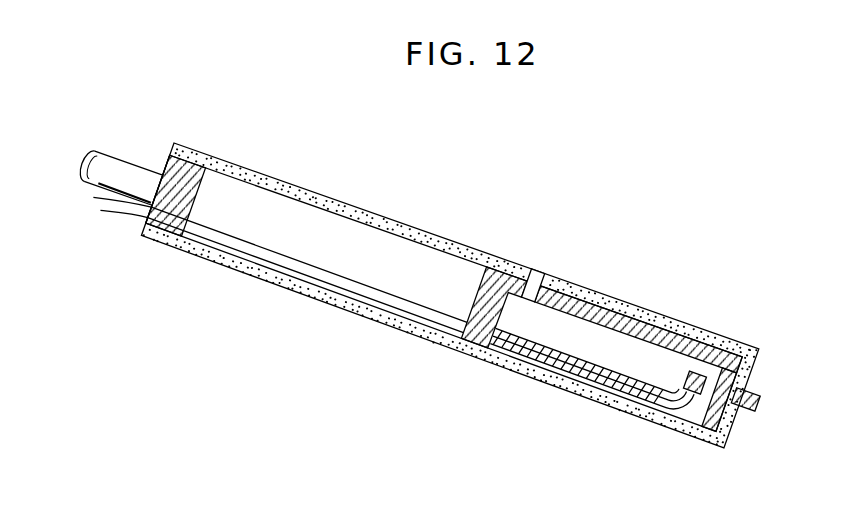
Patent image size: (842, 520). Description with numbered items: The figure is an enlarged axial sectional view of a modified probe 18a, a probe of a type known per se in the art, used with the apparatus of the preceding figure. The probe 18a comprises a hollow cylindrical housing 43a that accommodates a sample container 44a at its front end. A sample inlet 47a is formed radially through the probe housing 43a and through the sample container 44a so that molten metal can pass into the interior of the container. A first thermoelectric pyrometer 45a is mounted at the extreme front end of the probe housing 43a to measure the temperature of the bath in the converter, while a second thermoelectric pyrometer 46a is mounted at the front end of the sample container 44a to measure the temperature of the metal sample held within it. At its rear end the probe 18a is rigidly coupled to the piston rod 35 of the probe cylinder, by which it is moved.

The modified probe 18a is at (529, 255).
The piston rod 35 is at (128, 163).
The hollow cylindrical housing 43a is at (412, 220).
The sample container 44a is at (485, 328).
The first thermoelectric pyrometer 45a is at (758, 402).
The second thermoelectric pyrometer 46a is at (690, 372).
The sample inlet 47a is at (540, 296).